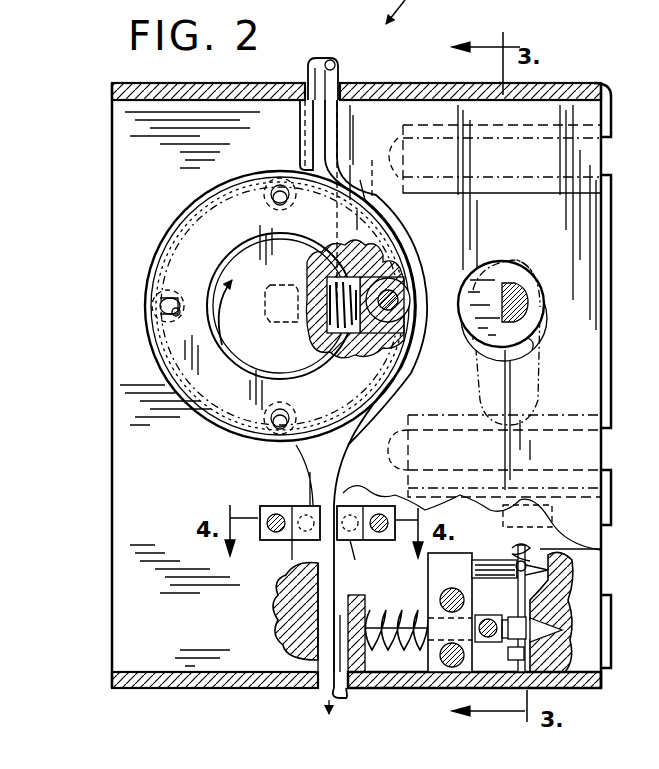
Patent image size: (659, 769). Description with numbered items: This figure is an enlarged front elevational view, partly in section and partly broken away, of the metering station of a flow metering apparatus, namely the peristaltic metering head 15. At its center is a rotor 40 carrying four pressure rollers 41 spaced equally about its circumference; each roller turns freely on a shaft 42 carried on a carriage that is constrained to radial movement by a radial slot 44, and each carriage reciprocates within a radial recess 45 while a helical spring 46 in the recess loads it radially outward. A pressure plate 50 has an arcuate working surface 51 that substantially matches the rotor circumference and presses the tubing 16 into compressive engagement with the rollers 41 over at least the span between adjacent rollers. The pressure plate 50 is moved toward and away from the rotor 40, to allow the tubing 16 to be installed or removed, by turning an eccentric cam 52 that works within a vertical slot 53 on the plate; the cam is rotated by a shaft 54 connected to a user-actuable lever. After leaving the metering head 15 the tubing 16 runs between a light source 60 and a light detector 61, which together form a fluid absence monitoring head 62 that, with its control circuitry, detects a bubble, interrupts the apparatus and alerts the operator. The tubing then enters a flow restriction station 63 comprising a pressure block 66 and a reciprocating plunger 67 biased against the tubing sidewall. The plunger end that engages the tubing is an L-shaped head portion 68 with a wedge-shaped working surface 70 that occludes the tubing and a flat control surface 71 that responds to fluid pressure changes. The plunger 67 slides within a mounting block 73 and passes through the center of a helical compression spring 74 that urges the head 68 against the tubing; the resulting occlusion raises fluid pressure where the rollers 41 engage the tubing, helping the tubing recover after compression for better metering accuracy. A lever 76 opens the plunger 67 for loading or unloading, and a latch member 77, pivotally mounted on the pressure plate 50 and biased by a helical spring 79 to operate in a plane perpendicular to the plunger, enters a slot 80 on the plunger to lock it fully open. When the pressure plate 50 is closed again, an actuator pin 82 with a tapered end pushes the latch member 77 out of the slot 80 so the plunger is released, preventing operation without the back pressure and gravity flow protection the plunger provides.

The peristaltic metering head 15 is at (590, 72).
The tubing 16 is at (306, 72).
The rotor 40 is at (206, 365).
The pressure rollers 41 is at (150, 292).
The shaft 42 is at (162, 306).
The radial slots 44 is at (170, 345).
The radial recess 45 is at (372, 252).
The helical spring 46 is at (322, 312).
The pressure plate 50 is at (360, 115).
The arcuate working surface 51 is at (372, 200).
The eccentric cam 52 is at (508, 270).
The vertical slot 53 is at (535, 343).
The shaft 54 is at (520, 300).
The light source 60 is at (300, 540).
The light detector 61 is at (368, 506).
The fluid absence monitoring head 62 is at (250, 500).
The flow restriction station 63 is at (464, 545).
The pressure block 66 is at (285, 610).
The plunger 67 is at (405, 650).
The L-shaped head portion 68 is at (358, 597).
The wedge-shaped working surface 70 is at (314, 690).
The flat control surface 71 is at (350, 628).
The mounting block 73 is at (436, 655).
The helical compression spring 74 is at (377, 672).
The lever 76 is at (442, 0).
The latch member 77 is at (560, 598).
The helical spring 79 is at (545, 548).
The slot 80 is at (495, 625).
The actuator pin 82 is at (490, 560).